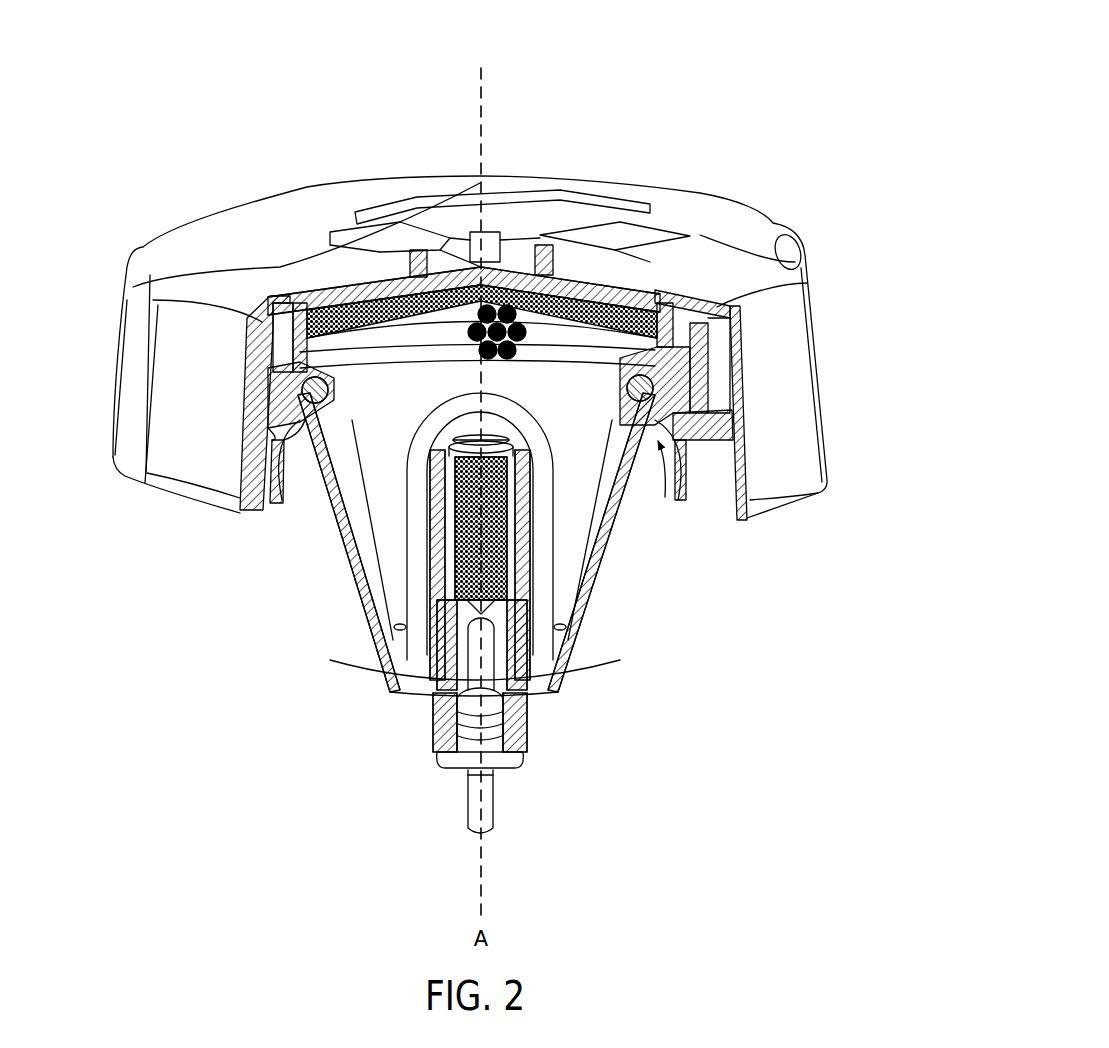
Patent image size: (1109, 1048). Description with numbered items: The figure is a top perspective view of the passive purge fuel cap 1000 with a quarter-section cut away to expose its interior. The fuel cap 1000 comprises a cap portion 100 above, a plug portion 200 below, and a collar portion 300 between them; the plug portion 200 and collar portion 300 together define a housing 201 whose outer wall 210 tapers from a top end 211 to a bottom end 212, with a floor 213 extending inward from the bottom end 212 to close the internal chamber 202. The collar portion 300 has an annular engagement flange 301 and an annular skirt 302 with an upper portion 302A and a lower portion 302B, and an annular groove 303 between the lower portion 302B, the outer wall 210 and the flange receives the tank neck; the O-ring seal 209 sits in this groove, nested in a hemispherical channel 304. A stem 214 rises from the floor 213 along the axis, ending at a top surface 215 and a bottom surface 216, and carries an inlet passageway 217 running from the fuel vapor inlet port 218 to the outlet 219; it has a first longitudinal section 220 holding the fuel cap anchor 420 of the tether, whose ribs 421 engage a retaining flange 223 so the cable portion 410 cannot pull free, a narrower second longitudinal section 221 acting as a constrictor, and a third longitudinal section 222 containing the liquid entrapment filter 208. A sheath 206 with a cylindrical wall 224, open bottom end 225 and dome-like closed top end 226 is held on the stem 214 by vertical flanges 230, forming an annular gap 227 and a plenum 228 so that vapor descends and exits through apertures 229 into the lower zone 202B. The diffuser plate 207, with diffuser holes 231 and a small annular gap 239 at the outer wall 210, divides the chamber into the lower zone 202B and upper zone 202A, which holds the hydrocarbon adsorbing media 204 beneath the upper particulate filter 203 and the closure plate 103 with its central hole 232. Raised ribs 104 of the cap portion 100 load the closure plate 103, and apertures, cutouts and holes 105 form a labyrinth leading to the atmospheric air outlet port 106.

The fuel cap 1000 is at (750, 108).
The cap portion 100 is at (188, 225).
The closure plate 103 is at (325, 300).
The raised ribs 104 is at (372, 240).
The apertures, cutouts, and holes 105 is at (467, 252).
The atmospheric air outlet port 106 is at (760, 458).
The plug portion 200 is at (305, 555).
The housing 201 is at (306, 554).
The internal chamber 202 is at (313, 543).
The upper zone 202A is at (582, 533).
The lower zone 202B is at (556, 690).
The upper particulate filter 203 is at (612, 300).
The hydrocarbon adsorbing media 204 is at (428, 250).
The sheath 206 is at (606, 550).
The diffuser plate 207 is at (584, 637).
The liquid entrapment filter 208 is at (460, 532).
The O-ring seal 209 is at (300, 392).
The outer wall 210 is at (600, 562).
The top end 211 is at (642, 292).
The bottom end 212 is at (556, 700).
The floor 213 is at (440, 720).
The stem 214 is at (558, 600).
The top surface 215 is at (378, 468).
The bottom surface 216 is at (506, 776).
The inlet passageway 217 is at (490, 724).
The fuel vapor inlet port 218 is at (468, 754).
The outlet 219 is at (343, 300).
The first longitudinal section 220 is at (455, 714).
The second longitudinal section 221 is at (432, 716).
The third longitudinal section 222 is at (532, 592).
The retaining flange 223 is at (453, 754).
The cylindrical wall 224 is at (455, 552).
The open bottom end 225 is at (517, 700).
The closed top end 226 is at (563, 252).
The annular gap 227 is at (550, 575).
The plenum 228 is at (372, 305).
The apertures 229 is at (430, 692).
The vertical flanges 230 is at (440, 612).
The diffuser holes 231 is at (440, 642).
The central hole 232 is at (490, 285).
The small annular gap 239 is at (445, 662).
The collar portion 300 is at (714, 500).
The annular engagement flange 301 is at (735, 295).
The annular skirt 302 is at (740, 385).
The upper portion 302A is at (768, 234).
The lower portion 302B is at (747, 497).
The annular groove 303 is at (740, 487).
The hemispherical channel 304 is at (710, 330).
The cable portion 410 is at (496, 818).
The fuel cap anchor 420 is at (502, 742).
The ribs 421 is at (478, 752).